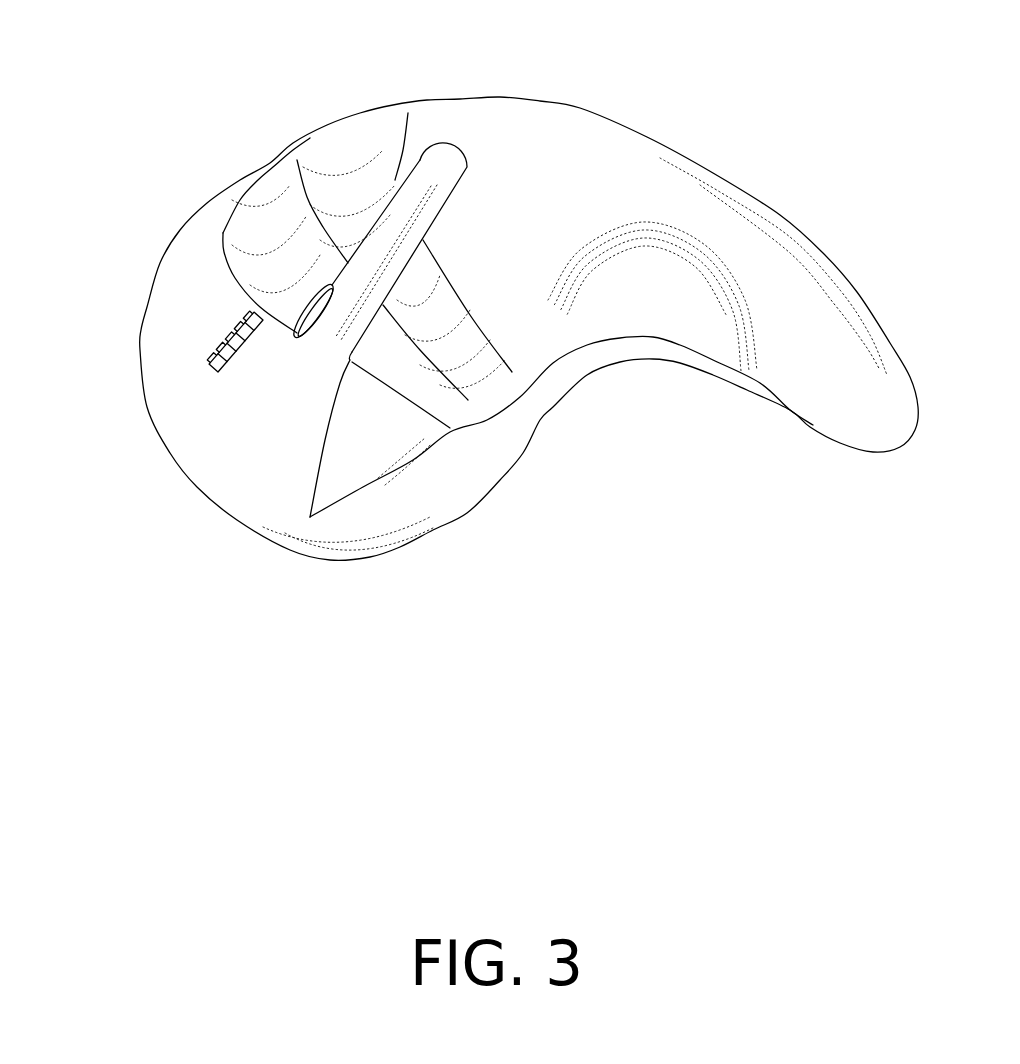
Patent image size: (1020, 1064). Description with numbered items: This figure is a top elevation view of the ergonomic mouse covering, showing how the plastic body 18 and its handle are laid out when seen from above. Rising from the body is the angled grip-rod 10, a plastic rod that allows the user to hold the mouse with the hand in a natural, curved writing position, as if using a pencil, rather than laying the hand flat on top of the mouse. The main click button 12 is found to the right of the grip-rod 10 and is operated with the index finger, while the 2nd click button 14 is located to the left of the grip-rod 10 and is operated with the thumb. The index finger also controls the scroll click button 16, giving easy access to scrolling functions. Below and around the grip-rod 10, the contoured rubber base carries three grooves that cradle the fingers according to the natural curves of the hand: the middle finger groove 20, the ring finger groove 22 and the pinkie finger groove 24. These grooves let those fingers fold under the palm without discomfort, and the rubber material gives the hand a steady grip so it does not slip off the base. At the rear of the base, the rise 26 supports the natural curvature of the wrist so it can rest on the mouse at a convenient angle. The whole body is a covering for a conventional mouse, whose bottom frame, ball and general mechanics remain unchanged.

The grip-rod 10 is at (433, 163).
The main click button 12 is at (308, 296).
The 2nd click button 14 is at (370, 453).
The scroll click button 16 is at (230, 337).
The plastic body 18 is at (230, 452).
The middle finger groove 20 is at (449, 405).
The ring finger groove 22 is at (480, 375).
The pinkie finger groove 24 is at (510, 342).
The rise 26 is at (640, 303).